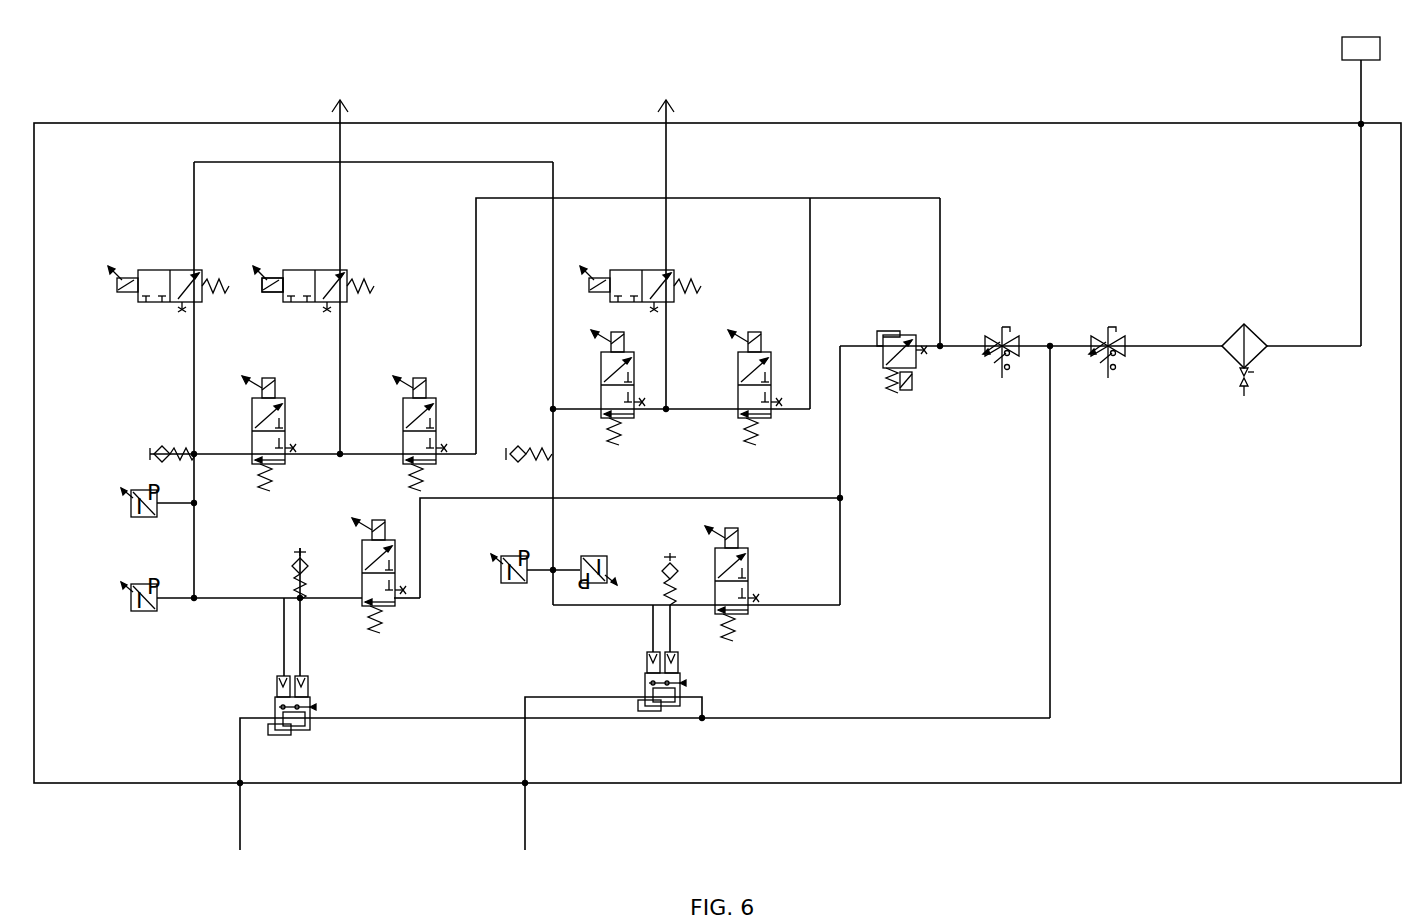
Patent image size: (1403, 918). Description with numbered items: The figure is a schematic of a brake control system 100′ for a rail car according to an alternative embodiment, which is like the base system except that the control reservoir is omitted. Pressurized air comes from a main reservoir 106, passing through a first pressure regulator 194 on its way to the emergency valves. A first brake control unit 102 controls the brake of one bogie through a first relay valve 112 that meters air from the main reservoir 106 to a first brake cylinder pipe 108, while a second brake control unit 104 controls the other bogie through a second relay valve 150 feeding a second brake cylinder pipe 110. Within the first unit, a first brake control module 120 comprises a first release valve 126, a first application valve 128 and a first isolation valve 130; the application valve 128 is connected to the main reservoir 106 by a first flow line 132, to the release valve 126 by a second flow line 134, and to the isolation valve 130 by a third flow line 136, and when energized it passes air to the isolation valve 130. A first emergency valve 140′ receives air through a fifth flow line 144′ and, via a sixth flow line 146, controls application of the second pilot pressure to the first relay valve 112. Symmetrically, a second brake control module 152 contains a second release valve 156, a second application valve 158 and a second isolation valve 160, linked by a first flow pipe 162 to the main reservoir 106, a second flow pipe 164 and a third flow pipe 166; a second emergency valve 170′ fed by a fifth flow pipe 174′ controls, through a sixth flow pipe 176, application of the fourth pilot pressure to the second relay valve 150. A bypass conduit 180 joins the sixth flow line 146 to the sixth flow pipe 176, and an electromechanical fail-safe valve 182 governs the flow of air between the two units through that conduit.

The brake control system 100′ is at (133, 86).
The first brake control unit 102 is at (850, 578).
The second brake control unit 104 is at (212, 690).
The main reservoir 106 is at (1340, 48).
The first brake cylinder pipe 108 is at (527, 815).
The second brake cylinder pipe 110 is at (239, 815).
The first relay valve 112 is at (668, 706).
The first brake control module 120 is at (828, 305).
The first release valve 126 is at (676, 272).
The first application valve 128 is at (763, 420).
The first isolation valve 130 is at (600, 368).
The first flow line 132 is at (813, 267).
The second flow line 134 is at (668, 337).
The third flow line 136 is at (648, 411).
The first emergency valve 140′ is at (745, 612).
The fifth flow line 144′ is at (842, 546).
The sixth flow line 146 is at (556, 488).
The second relay valve 150 is at (300, 736).
The second brake control module 152 is at (289, 255).
The second release valve 156 is at (327, 268).
The second application valve 158 is at (400, 412).
The second isolation valve 160 is at (250, 444).
The first flow pipe 162 is at (523, 196).
The second flow pipe 164 is at (342, 353).
The third flow pipe 166 is at (316, 445).
The second emergency valve 170′ is at (368, 612).
The fifth flow pipe 174′ is at (444, 500).
The sixth flow pipe 176 is at (228, 600).
The bypass conduit 180 is at (405, 160).
The fail-safe valve 182 is at (160, 268).
The first pressure regulator 194 is at (908, 368).